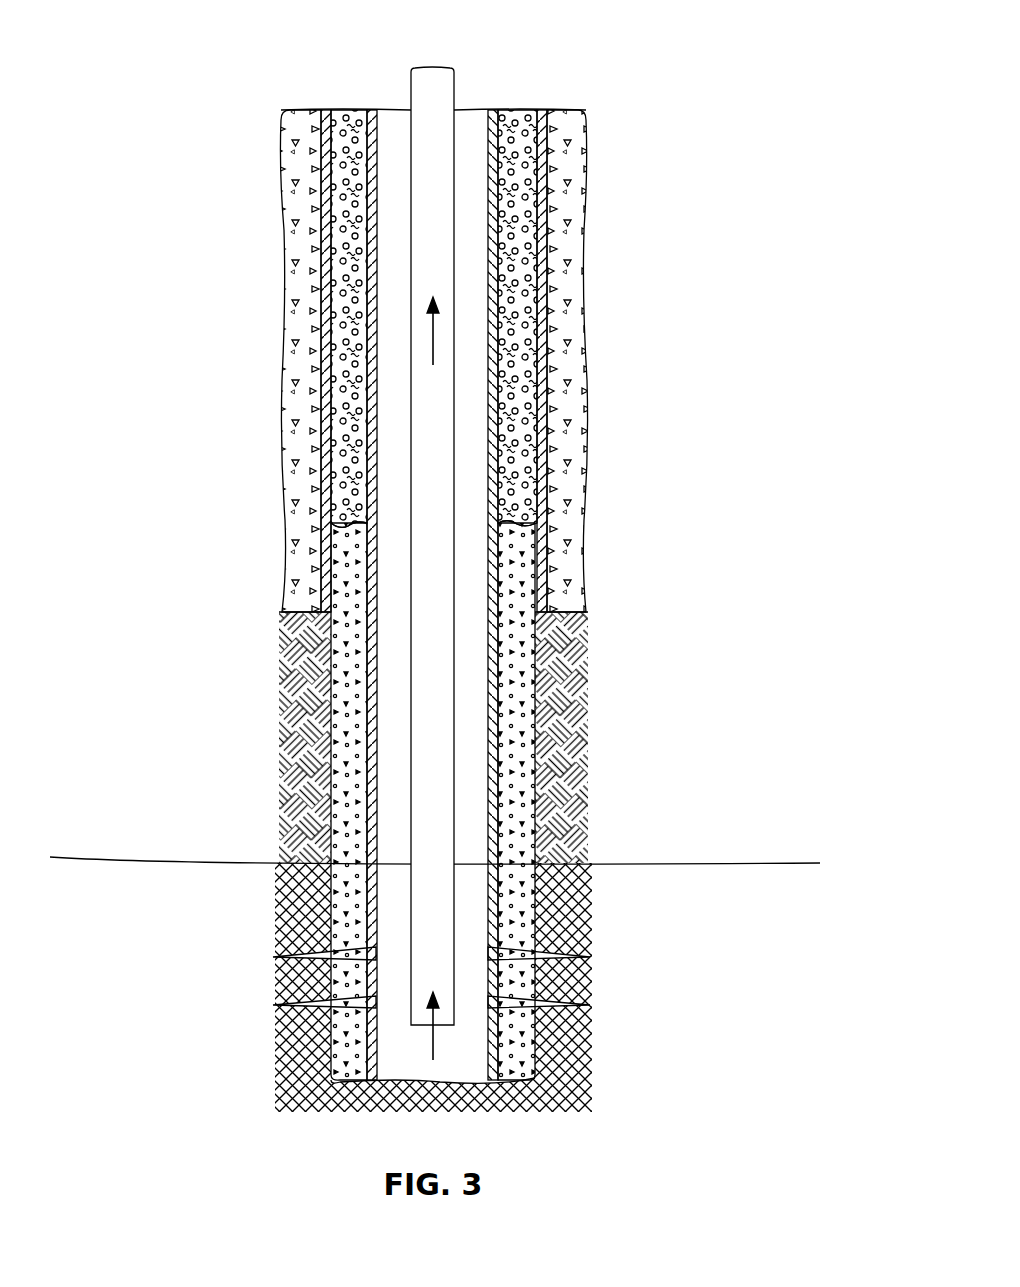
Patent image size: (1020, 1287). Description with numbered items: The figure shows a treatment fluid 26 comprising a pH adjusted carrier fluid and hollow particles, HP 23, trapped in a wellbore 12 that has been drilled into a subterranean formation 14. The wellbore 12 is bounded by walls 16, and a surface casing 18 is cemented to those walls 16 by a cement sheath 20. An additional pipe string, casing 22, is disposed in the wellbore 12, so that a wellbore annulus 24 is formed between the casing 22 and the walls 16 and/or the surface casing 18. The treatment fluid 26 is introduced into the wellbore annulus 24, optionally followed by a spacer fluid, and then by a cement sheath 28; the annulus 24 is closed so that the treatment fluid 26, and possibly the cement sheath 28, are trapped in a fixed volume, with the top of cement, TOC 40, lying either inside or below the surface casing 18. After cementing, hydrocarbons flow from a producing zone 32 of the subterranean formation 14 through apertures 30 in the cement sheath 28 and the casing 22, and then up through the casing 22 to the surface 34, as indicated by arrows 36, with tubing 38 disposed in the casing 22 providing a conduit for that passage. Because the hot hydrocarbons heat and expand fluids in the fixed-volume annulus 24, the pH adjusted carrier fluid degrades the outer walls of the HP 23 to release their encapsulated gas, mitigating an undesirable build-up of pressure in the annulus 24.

The wellbore 12 is at (532, 663).
The subterranean formation 14 is at (292, 808).
The walls 16 is at (586, 150).
The surface casing 18 is at (546, 233).
The cement sheath 20 is at (566, 186).
The casing 22 is at (495, 453).
The hollow particles (HP) 23 is at (537, 390).
The wellbore annulus 24 is at (520, 792).
The treatment fluid 26 is at (525, 333).
The cement sheath 28 is at (518, 832).
The apertures 30 is at (273, 1005).
The producing zone 32 is at (292, 912).
The surface 34 is at (483, 108).
The arrows 36 is at (431, 335).
The tubing 38 is at (410, 82).
The top of cement (TOC) 40 is at (520, 525).